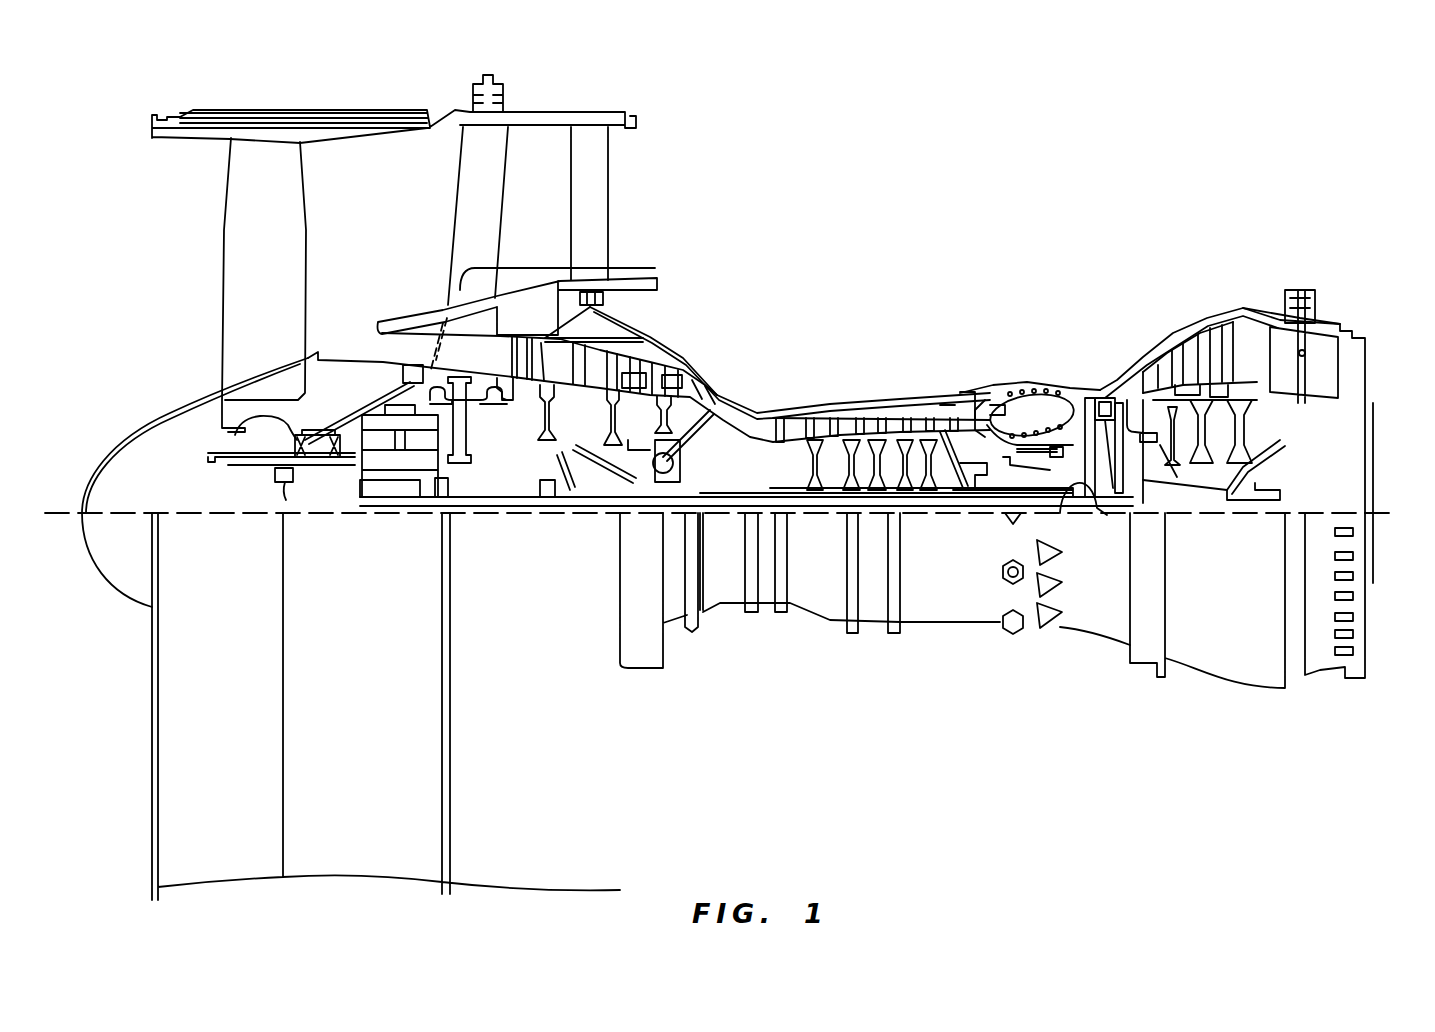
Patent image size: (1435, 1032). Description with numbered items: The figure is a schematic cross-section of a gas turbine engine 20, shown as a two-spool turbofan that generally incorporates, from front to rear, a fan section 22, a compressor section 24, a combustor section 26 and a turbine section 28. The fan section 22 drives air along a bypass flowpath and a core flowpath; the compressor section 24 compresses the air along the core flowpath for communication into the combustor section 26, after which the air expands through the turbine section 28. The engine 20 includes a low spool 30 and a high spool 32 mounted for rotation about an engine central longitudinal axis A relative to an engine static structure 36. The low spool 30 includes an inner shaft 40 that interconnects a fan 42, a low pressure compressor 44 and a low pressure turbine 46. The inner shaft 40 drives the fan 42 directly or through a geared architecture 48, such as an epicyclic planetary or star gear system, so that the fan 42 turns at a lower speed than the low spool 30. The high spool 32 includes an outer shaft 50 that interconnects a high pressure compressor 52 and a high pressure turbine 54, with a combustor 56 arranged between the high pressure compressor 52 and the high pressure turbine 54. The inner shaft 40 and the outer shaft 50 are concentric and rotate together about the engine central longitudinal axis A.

The gas turbine engine 20 is at (1086, 172).
The fan section 22 is at (445, 85).
The compressor section 24 is at (990, 255).
The combustor section 26 is at (1085, 255).
The turbine section 28 is at (1300, 255).
The low spool 30 is at (727, 457).
The high spool 32 is at (943, 432).
The engine static structure 36 is at (869, 626).
The inner shaft 40 is at (1065, 513).
The fan 42 is at (282, 291).
The low pressure compressor 44 is at (637, 357).
The low pressure turbine 46 is at (1214, 345).
The geared architecture 48 is at (400, 497).
The outer shaft 50 is at (1108, 515).
The high pressure compressor 52 is at (795, 430).
The high pressure turbine 54 is at (1103, 400).
The combustor 56 is at (1037, 414).
The engine central longitudinal axis A is at (1393, 505).